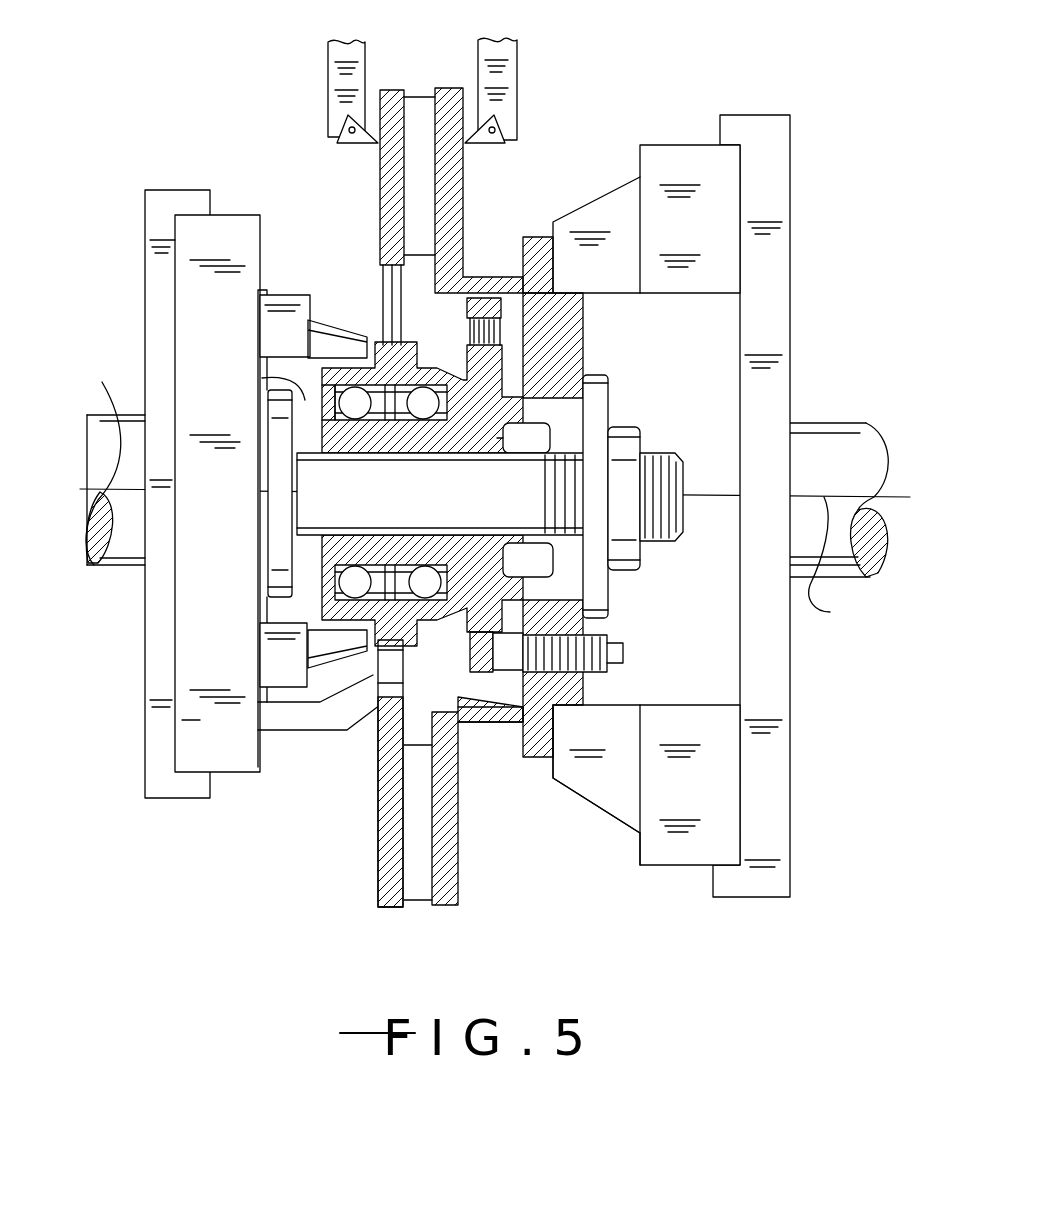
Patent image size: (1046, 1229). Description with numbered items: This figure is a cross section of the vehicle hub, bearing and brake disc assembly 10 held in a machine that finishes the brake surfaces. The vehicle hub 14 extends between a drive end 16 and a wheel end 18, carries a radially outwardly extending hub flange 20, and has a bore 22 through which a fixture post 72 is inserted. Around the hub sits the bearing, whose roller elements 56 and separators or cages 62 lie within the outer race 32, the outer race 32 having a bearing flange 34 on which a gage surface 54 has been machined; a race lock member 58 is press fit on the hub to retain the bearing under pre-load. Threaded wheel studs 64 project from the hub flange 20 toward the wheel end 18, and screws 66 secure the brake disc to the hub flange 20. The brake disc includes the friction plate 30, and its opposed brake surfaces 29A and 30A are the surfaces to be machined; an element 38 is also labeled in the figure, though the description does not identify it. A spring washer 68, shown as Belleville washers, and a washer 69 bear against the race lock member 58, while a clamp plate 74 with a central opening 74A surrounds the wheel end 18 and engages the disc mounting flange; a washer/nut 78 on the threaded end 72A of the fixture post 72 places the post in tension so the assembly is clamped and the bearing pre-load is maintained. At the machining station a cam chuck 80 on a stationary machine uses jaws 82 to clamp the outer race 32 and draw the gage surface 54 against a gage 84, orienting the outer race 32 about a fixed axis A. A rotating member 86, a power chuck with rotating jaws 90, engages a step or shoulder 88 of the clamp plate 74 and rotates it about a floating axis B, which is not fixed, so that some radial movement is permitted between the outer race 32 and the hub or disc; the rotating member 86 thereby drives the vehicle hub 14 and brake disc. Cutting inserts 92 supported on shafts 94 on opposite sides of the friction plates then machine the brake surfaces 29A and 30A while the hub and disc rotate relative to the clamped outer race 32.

The vehicle hub, bearing and brake disc assembly 10 is at (582, 130).
The vehicle hub 14 is at (523, 438).
The drive end 16 is at (332, 430).
The wheel end 18 is at (503, 548).
The hub flange 20 is at (470, 300).
The bore 22 is at (455, 570).
The brake surface 29A is at (377, 860).
The friction plate 30 is at (448, 857).
The brake surface 30A is at (440, 905).
The outer race 32 is at (412, 358).
The bearing flange 34 is at (380, 773).
The rotor foot 38 is at (460, 725).
The gage surface 54 is at (373, 693).
The roller elements 56 is at (433, 395).
The race lock member 58 is at (355, 425).
The separators or cages 62 is at (418, 420).
The threaded wheel studs 64 is at (603, 680).
The screws 66 is at (520, 322).
The spring washer 68 is at (300, 556).
The washer 69 is at (262, 378).
The fixture post 72 is at (400, 575).
The threaded end 72A is at (660, 455).
The clamp plate 74 is at (567, 352).
The central opening 74A is at (583, 615).
The washer/nut 78 is at (625, 437).
The cam chuck 80 is at (228, 230).
The jaws 82 is at (335, 323).
The gage 84 is at (310, 718).
The rotating member 86 is at (777, 190).
The step or shoulder 88 is at (556, 775).
The rotating jaws 90 is at (608, 200).
The cutting inserts 92 is at (362, 143).
The shafts 94 is at (343, 70).
The fixed axis A is at (115, 452).
The floating axis B is at (839, 528).